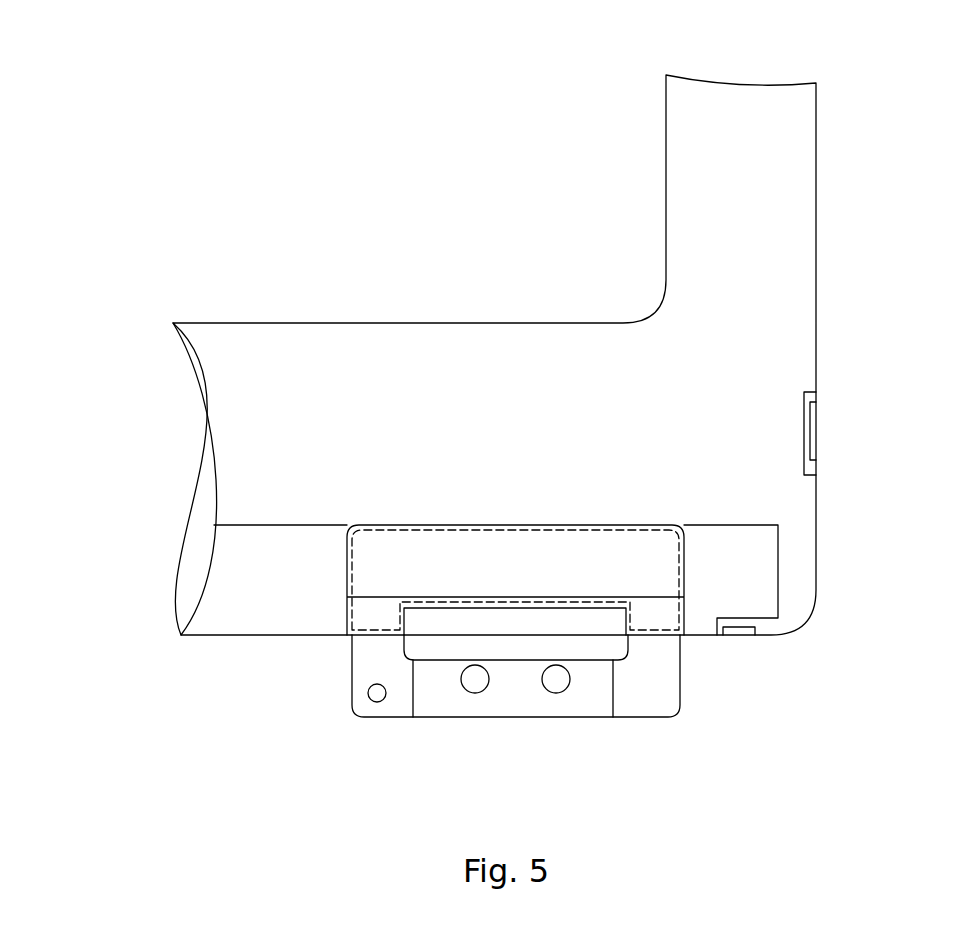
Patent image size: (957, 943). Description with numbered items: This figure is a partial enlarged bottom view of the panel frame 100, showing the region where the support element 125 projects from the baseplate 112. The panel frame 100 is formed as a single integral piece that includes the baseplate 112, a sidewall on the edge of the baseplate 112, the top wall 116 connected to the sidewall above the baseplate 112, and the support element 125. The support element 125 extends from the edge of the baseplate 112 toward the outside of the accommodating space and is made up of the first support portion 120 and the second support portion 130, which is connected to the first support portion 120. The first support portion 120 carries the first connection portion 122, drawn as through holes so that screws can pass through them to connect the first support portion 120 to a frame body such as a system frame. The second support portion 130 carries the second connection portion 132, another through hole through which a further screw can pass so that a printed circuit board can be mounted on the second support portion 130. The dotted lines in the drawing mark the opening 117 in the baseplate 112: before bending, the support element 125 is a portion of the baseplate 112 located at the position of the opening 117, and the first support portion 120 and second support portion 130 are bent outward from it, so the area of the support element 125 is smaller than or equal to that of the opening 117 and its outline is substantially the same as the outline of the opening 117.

The panel frame 100 is at (134, 71).
The baseplate 112 is at (782, 273).
The top wall 116 is at (653, 618).
The opening 117 is at (442, 513).
The first support portion 120 is at (438, 683).
The first connection portion 122 is at (495, 699).
The support element 125 is at (268, 643).
The second support portion 130 is at (363, 672).
The second connection portion 132 is at (359, 710).